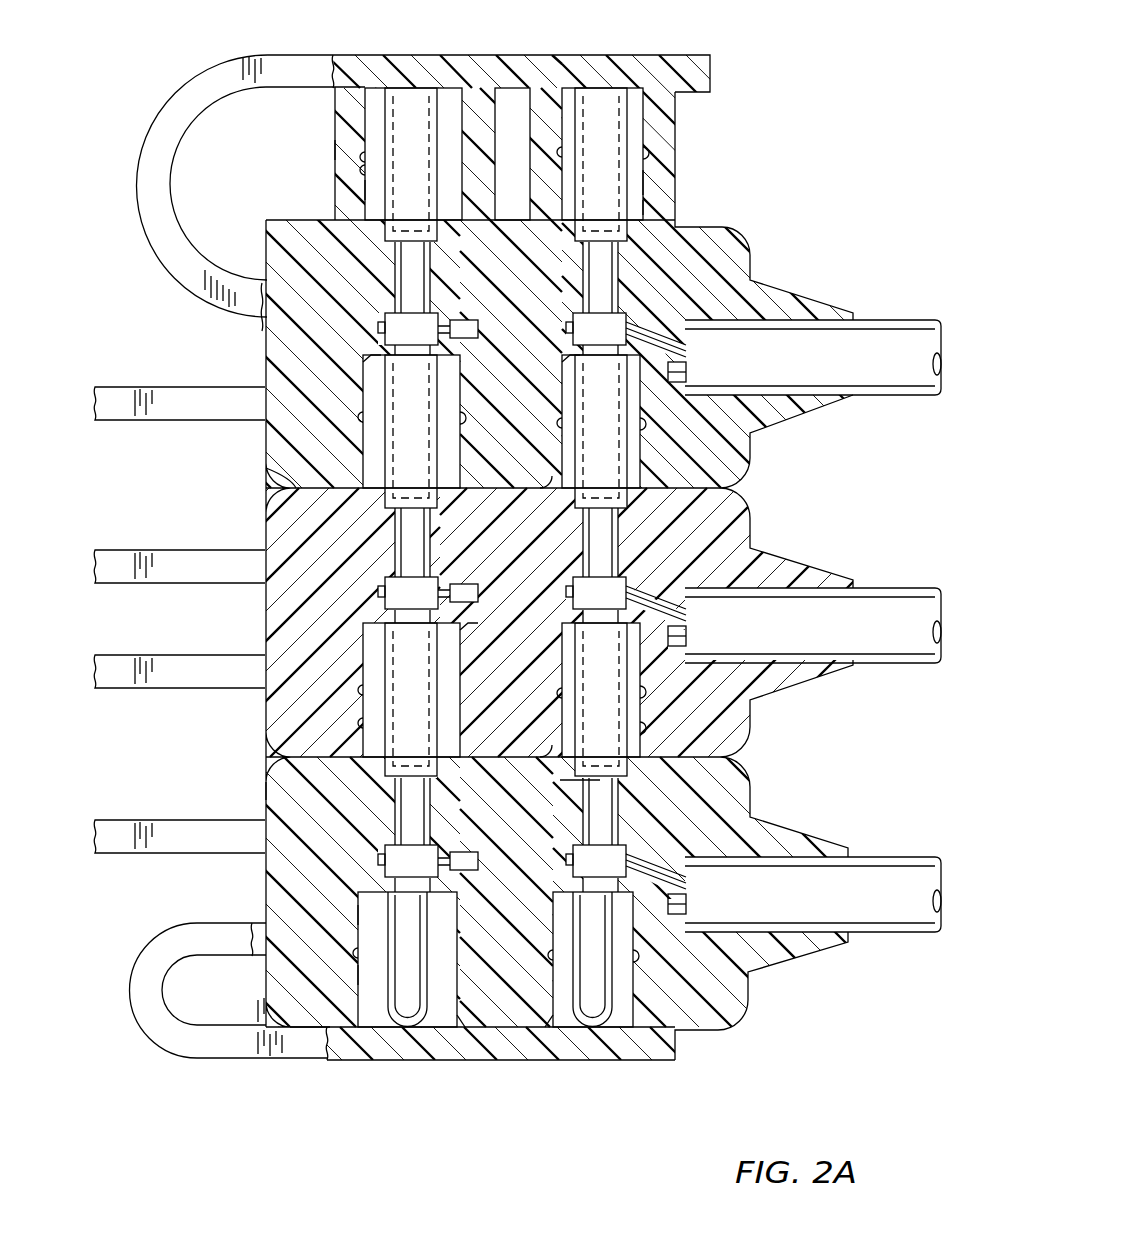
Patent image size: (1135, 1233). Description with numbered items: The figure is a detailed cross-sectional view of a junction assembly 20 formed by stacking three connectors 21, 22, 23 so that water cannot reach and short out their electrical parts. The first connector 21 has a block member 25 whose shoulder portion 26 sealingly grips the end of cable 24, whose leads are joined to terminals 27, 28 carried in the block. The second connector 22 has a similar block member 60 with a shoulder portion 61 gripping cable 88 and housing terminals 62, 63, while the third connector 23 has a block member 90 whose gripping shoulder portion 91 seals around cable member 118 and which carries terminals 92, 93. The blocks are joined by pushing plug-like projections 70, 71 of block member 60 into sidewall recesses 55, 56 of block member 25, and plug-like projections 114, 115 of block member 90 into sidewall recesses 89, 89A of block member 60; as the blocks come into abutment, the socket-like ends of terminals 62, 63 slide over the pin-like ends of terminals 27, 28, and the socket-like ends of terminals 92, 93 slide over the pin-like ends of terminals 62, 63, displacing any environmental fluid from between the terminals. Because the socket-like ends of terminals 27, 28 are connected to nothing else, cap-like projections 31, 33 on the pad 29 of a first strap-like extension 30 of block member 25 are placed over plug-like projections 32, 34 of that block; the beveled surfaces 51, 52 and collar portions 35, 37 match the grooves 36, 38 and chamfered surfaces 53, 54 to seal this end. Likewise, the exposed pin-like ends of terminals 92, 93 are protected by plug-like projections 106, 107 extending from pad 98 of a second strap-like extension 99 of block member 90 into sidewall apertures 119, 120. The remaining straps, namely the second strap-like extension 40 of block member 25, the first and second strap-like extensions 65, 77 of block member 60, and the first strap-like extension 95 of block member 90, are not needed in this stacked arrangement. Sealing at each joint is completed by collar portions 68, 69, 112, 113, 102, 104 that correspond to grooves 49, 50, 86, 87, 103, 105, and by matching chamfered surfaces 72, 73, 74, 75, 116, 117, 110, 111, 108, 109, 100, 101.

The junction assembly 20 is at (770, 147).
The connector 21 is at (887, 277).
The connector 22 is at (895, 530).
The connector 23 is at (888, 795).
The cable 24 is at (922, 318).
The block member 25 is at (745, 240).
The shoulder portion 26 is at (783, 300).
The terminal 27 is at (625, 325).
The terminal 28 is at (440, 323).
The pad 29 is at (535, 55).
The first strap-like extension 30 is at (194, 82).
The cap-like projection 31 is at (668, 183).
The plug-like projection 32 is at (645, 205).
The cap-like projection 33 is at (335, 147).
The plug-like projection 34 is at (362, 186).
The collar portion 35 is at (648, 154).
The groove 36 is at (658, 164).
The collar portion 37 is at (361, 138).
The groove 38 is at (362, 162).
The second strap-like extension 40 is at (125, 385).
The groove 49 is at (562, 425).
The groove 50 is at (363, 418).
The beveled surface 51 is at (640, 88).
The beveled surface 52 is at (362, 88).
The chamfered surface 53 is at (527, 223).
The chamfered surface 54 is at (375, 228).
The sidewall recess 55 is at (565, 378).
The sidewall recess 56 is at (363, 373).
The block member 60 is at (748, 512).
The shoulder portion 61 is at (812, 565).
The terminal 62 is at (622, 580).
The terminal 63 is at (435, 580).
The first strap-like extension 65 is at (128, 548).
The collar portion 68 is at (642, 425).
The collar portion 69 is at (362, 455).
The plug-like projection 70 is at (640, 463).
The plug-like projection 71 is at (458, 448).
The chamfered surface 72 is at (564, 358).
The chamfered surface 73 is at (365, 357).
The chamfered surface 74 is at (550, 482).
The chamfered surface 75 is at (267, 463).
The second strap-like extension 77 is at (147, 652).
The groove 86 is at (642, 690).
The groove 87 is at (362, 725).
The cable 88 is at (918, 585).
The sidewall recess 89 is at (640, 726).
The sidewall recess 89A is at (365, 622).
The block member 90 is at (748, 785).
The gripping shoulder portion 91 is at (790, 820).
The terminal 92 is at (622, 848).
The terminal 93 is at (433, 848).
The first strap-like extension 95 is at (150, 818).
The pad 98 is at (486, 1060).
The second strap-like extension 99 is at (161, 1051).
The chamfered surface 100 is at (544, 1015).
The chamfered surface 101 is at (340, 1047).
The collar portion 102 is at (637, 968).
The groove 103 is at (553, 971).
The collar portion 104 is at (353, 953).
The groove 105 is at (353, 974).
The plug-like projection 106 is at (553, 927).
The plug-like projection 107 is at (440, 928).
The chamfered surface 108 is at (560, 878).
The chamfered surface 109 is at (358, 877).
The chamfered surface 110 is at (548, 752).
The chamfered surface 111 is at (282, 758).
The collar portion 112 is at (560, 697).
The collar portion 113 is at (360, 690).
The plug-like projection 114 is at (560, 657).
The plug-like projection 115 is at (360, 647).
The chamfered surface 116 is at (560, 620).
The chamfered surface 117 is at (460, 625).
The cable member 118 is at (915, 855).
The sidewall aperture 119 is at (635, 1003).
The sidewall aperture 120 is at (357, 910).